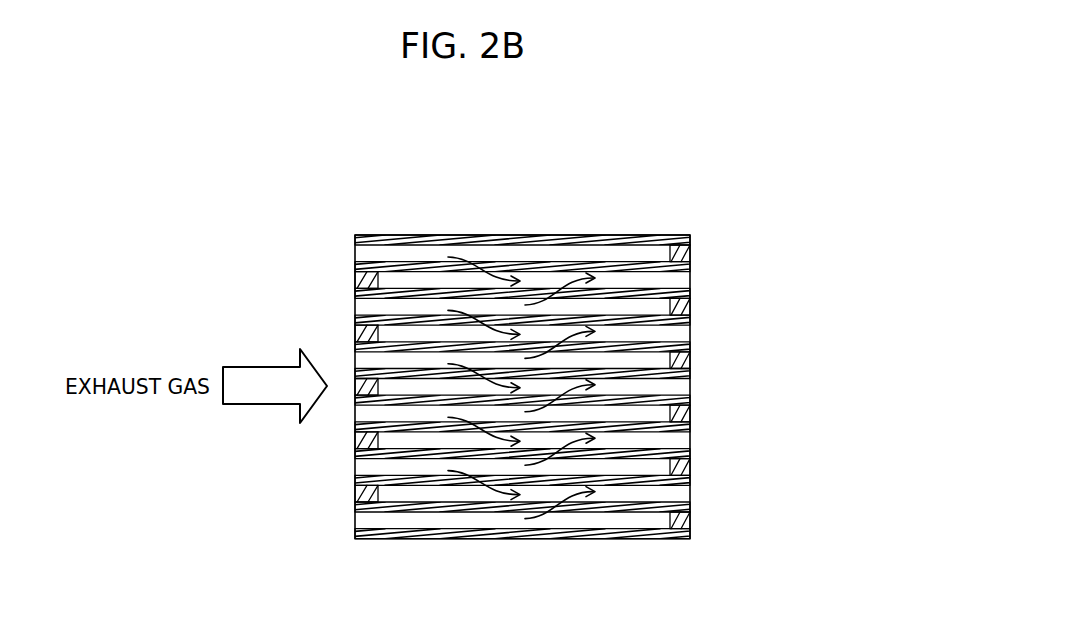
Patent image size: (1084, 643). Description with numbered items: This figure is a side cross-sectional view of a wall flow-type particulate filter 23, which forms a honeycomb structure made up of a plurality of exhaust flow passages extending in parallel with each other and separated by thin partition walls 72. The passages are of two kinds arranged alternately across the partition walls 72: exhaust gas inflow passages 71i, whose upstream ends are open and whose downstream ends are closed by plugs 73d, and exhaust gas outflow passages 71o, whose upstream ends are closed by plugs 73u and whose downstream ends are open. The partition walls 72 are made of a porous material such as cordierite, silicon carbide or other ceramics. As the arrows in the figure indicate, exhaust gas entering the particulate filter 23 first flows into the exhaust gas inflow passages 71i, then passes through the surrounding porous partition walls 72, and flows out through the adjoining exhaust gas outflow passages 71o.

The particulate filter 23 is at (666, 132).
The partition walls 72 is at (545, 293).
The plugs 73u is at (355, 328).
The plugs 73d is at (690, 312).
The exhaust gas outflow passages 71o is at (417, 332).
The exhaust gas inflow passages 71i is at (428, 458).